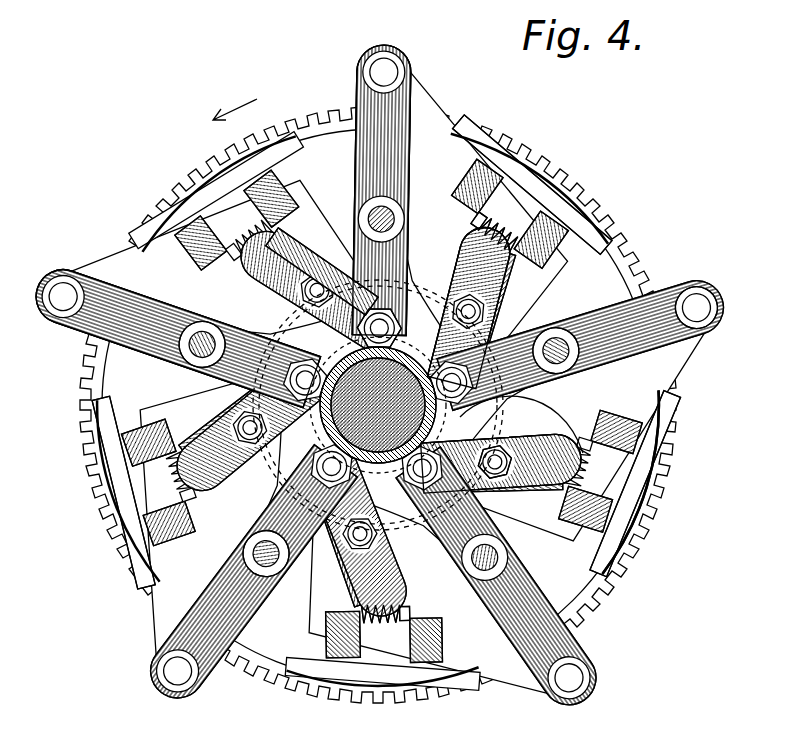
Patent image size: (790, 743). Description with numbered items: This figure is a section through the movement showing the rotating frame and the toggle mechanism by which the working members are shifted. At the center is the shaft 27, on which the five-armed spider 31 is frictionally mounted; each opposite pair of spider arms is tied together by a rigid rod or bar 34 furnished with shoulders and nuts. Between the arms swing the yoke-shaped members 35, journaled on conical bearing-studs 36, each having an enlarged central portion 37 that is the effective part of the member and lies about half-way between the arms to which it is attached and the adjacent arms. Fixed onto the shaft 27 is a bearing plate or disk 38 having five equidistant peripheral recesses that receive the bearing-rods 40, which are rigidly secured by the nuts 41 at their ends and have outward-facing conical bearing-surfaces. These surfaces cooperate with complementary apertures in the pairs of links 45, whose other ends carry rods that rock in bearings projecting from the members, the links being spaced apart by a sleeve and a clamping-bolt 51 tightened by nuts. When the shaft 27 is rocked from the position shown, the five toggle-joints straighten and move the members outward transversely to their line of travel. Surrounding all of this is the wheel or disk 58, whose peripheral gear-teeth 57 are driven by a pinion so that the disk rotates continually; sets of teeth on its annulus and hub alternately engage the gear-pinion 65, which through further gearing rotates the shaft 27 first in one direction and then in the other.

The shaft 27 is at (378, 545).
The spider 31 is at (150, 367).
The rod or bar 34 is at (555, 340).
The swinging yoke-shaped member 35 is at (543, 248).
The conical bearing-stud 36 is at (706, 305).
The enlarged central portion 37 is at (510, 205).
The bearing plate or disk 38 is at (497, 494).
The bearing-rod 40 is at (376, 328).
The nut 41 is at (547, 403).
The link or bar 45 is at (493, 293).
The clamping-bolt 51 is at (243, 424).
The peripheral gear-teeth 57 is at (663, 497).
The wheel or disk 58 is at (553, 587).
The gear-pinion 65 is at (378, 435).